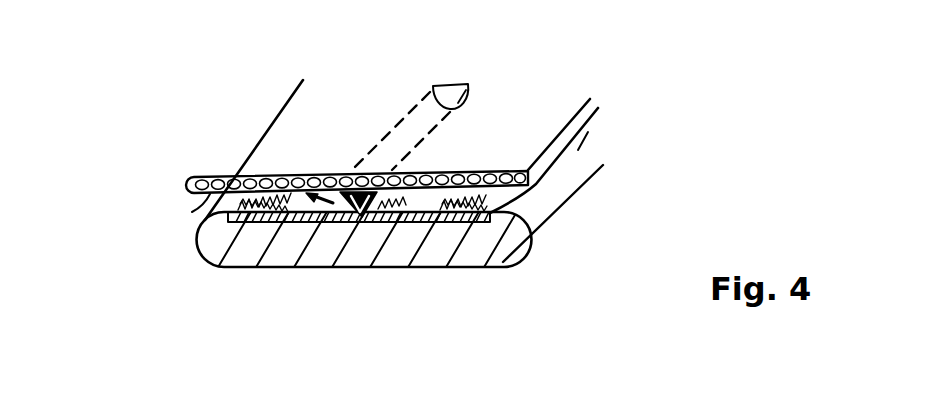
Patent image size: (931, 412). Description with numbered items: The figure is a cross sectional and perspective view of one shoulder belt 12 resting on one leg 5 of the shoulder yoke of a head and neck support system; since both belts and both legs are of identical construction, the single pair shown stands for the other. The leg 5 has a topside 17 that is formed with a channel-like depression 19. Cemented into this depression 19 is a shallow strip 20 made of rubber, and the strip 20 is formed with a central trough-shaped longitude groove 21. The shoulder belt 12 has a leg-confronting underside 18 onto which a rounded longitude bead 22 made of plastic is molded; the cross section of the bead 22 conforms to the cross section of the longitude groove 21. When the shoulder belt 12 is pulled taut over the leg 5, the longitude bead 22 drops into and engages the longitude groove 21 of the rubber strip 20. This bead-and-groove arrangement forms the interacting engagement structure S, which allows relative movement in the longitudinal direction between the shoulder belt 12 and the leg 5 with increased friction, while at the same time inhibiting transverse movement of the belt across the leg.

The leg 5 is at (201, 272).
The shoulder belt 12 is at (252, 123).
The topside 17 is at (490, 205).
The leg-confronting underside 18 is at (210, 194).
The channel-like depression 19 is at (428, 214).
The shallow strip 20 is at (298, 231).
The longitude groove 21 is at (357, 216).
The longitude bead 22 is at (350, 165).
The interacting engagement structure S is at (253, 175).